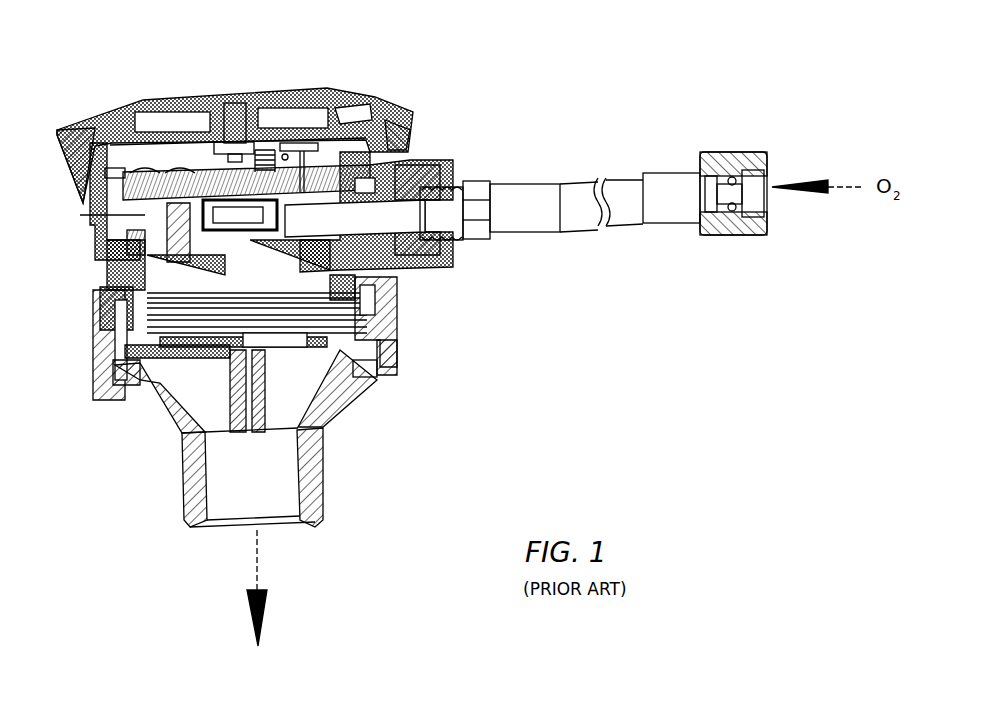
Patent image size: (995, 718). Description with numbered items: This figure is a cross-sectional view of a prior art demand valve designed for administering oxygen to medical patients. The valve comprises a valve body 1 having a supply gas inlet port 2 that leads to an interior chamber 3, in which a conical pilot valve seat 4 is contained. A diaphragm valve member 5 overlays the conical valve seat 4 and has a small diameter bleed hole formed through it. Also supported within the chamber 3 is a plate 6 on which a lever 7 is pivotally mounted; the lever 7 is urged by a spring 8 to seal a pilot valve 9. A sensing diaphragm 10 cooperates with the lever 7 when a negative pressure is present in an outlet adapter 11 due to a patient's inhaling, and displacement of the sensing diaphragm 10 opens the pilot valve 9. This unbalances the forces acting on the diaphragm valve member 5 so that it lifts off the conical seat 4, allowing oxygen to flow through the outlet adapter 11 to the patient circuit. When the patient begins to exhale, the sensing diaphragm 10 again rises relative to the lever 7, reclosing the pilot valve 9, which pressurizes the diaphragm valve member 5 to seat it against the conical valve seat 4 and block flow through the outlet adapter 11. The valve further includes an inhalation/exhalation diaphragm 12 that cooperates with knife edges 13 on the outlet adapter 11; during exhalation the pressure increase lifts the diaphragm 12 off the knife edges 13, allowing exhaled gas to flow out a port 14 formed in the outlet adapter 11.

The valve body 1 is at (333, 408).
The supply gas inlet port 2 is at (437, 267).
The interior chamber 3 is at (213, 237).
The conical pilot valve seat 4 is at (93, 297).
The diaphragm valve member 5 is at (383, 293).
The plate 6 is at (180, 187).
The lever 7 is at (250, 135).
The spring 8 is at (265, 165).
The pilot valve 9 is at (307, 160).
The sensing diaphragm 10 is at (325, 128).
The outlet adapter 11 is at (185, 492).
The inhalation/exhalation diaphragm 12 is at (147, 352).
The knife edges 13 is at (132, 372).
The port 14 is at (372, 377).